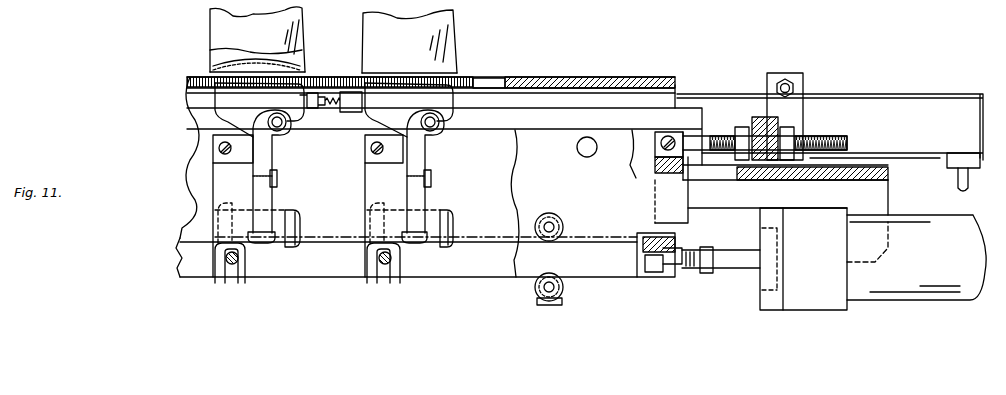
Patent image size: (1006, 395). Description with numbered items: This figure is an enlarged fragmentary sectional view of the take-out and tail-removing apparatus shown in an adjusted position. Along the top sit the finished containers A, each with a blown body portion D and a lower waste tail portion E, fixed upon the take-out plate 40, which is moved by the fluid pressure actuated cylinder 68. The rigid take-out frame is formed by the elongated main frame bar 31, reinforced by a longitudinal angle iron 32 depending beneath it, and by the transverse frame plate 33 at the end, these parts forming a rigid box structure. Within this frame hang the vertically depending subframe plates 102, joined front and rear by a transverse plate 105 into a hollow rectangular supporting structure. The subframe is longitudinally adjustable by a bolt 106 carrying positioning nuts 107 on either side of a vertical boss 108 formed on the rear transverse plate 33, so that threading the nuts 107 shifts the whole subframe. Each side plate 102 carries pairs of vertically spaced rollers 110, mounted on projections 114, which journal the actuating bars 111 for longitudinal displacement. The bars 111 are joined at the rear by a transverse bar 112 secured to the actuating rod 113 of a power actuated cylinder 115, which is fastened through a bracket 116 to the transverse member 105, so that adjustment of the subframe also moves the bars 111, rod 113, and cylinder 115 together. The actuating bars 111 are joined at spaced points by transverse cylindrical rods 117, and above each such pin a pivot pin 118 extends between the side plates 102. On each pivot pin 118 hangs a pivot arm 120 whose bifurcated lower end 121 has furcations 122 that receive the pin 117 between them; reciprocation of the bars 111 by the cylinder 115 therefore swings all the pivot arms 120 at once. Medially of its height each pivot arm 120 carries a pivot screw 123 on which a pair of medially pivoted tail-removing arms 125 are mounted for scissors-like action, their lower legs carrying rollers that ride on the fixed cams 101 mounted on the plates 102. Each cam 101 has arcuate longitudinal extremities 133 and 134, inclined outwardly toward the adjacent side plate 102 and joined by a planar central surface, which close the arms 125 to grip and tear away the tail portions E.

The container A is at (302, 12).
The blown body portion D is at (303, 44).
The tail portion E is at (236, 111).
The main frame bar 31 is at (662, 117).
The longitudinal angle iron 32 is at (890, 200).
The transverse frame plate 33 is at (812, 183).
The take-out plate 40 is at (553, 80).
The fluid pressure actuated cylinder 68 is at (868, 98).
The fixed cam 101 is at (304, 206).
The subframe plate 102 is at (470, 156).
The transverse plate 105 is at (680, 174).
The bolt 106 is at (828, 136).
The positioning nut 107 is at (742, 126).
The vertical boss 108 is at (764, 178).
The roller 110 is at (564, 225).
The actuating bar 111 is at (603, 269).
The transverse bar 112 is at (677, 240).
The actuating rod 113 is at (730, 269).
The projection 114 is at (563, 303).
The power actuated cylinder 115 is at (953, 222).
The bracket 116 is at (756, 219).
The transverse cylindrical rod 117 is at (238, 258).
The pivot pin 118 is at (218, 148).
The pivot arm 120 is at (213, 176).
The frame edge 121 is at (200, 225).
The furcation 122 is at (242, 283).
The pivot screw 123 is at (273, 182).
The tail-removing arm 125 is at (281, 160).
The arcuate longitudinal extremity 133 is at (301, 216).
The arcuate longitudinal extremity 134 is at (228, 203).